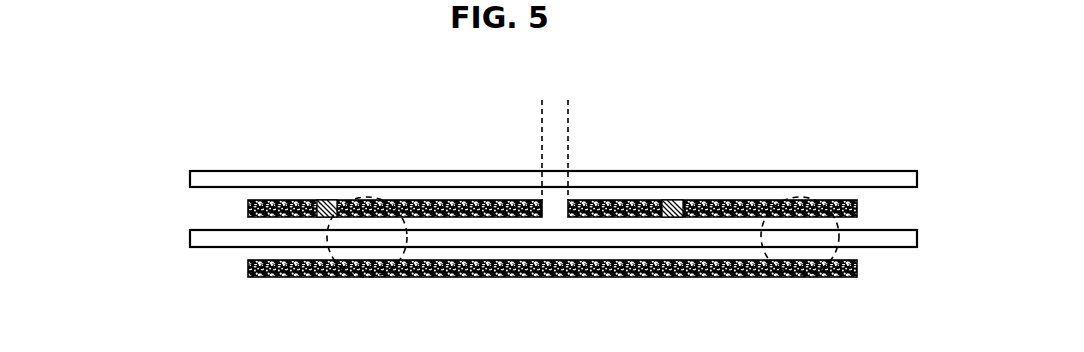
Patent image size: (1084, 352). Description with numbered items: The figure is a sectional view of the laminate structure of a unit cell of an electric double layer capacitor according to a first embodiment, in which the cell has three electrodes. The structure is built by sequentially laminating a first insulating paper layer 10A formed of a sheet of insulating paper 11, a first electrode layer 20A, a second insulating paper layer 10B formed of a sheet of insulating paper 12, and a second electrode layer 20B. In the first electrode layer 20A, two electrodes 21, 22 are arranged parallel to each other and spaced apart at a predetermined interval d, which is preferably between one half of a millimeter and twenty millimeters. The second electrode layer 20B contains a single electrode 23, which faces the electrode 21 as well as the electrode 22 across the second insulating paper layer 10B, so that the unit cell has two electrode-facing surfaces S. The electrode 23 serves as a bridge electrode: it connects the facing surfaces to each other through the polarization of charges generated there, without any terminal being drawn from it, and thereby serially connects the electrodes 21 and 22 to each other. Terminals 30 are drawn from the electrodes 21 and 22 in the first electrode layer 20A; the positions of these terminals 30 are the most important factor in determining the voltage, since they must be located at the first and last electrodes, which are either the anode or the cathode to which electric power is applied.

The first insulating paper layer 10A is at (178, 179).
The second insulating paper layer 10B is at (178, 238).
The sheet of insulating paper 11 is at (220, 177).
The sheet of insulating paper 12 is at (746, 241).
The first electrode layer 20A is at (178, 209).
The second electrode layer 20B is at (178, 268).
The electrode 21 is at (441, 202).
The electrode 22 is at (746, 202).
The electrode 23 is at (490, 272).
The terminals 30 is at (326, 202).
The electrode-facing surfaces S is at (407, 277).
The interval d is at (515, 110).